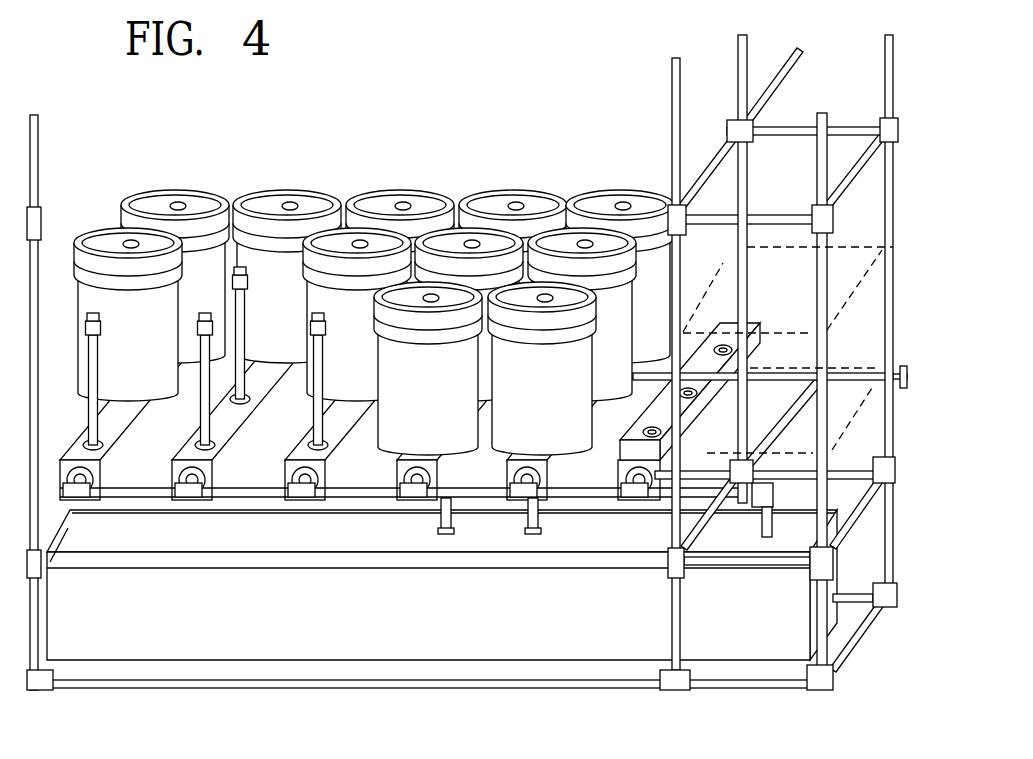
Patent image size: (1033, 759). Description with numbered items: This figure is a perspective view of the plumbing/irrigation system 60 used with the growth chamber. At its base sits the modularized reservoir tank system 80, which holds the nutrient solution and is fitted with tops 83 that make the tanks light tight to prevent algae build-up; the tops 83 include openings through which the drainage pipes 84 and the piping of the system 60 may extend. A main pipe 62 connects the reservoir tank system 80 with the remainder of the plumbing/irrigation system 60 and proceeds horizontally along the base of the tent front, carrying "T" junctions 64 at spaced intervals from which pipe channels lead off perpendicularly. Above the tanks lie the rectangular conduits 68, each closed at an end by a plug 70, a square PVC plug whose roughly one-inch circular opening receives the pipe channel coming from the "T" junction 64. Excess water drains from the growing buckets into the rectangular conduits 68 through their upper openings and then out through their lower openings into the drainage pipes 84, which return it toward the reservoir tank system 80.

The plumbing/irrigation system 60 is at (178, 620).
The main pipe 62 is at (378, 498).
The "T" junction 64 is at (265, 497).
The rectangular conduit 68 is at (757, 350).
The plug 70 is at (557, 492).
The modularized reservoir tank system 80 is at (365, 643).
The top 83 is at (325, 563).
The drainage pipe 84 is at (537, 517).